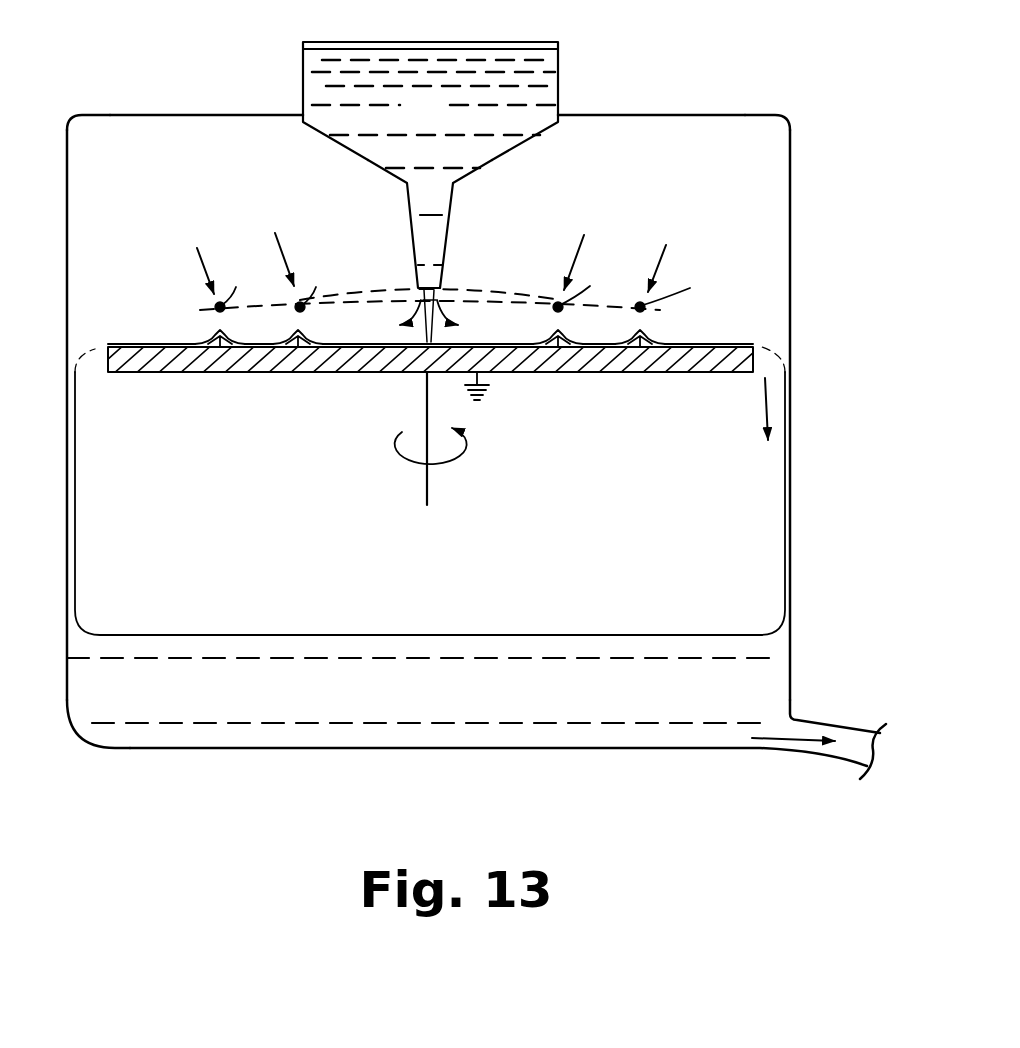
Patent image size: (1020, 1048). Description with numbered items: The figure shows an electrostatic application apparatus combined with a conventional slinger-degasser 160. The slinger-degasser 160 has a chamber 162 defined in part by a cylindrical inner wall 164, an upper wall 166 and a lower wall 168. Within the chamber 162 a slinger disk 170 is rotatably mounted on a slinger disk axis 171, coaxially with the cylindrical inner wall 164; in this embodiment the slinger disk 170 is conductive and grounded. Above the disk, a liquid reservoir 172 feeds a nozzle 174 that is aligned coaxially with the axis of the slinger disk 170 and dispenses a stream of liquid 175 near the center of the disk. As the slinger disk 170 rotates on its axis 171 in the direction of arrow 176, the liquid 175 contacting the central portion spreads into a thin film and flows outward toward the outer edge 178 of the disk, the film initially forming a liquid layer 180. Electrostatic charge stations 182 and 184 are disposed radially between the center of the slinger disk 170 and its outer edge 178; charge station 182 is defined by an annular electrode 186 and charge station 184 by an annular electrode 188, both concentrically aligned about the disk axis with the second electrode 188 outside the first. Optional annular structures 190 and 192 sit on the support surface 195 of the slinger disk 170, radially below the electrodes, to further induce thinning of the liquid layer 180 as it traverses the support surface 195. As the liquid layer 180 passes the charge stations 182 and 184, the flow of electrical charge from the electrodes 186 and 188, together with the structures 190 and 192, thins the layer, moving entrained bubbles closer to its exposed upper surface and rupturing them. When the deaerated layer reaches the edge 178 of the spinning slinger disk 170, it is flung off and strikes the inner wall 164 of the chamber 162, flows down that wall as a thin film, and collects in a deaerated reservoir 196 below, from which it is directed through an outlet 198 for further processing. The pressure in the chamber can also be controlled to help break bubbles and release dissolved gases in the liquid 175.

The slinger-degasser 160 is at (842, 194).
The chamber 162 is at (757, 115).
The cylindrical inner wall 164 is at (67, 183).
The upper wall 166 is at (678, 115).
The lower wall 168 is at (655, 752).
The slinger disk 170 is at (170, 375).
The slinger disk axis 171 is at (427, 490).
The liquid reservoir 172 is at (450, 118).
The nozzle 174 is at (441, 264).
The liquid 175 is at (415, 318).
The arrow 176 is at (466, 463).
The outer edge 178 is at (108, 375).
The liquid layer 180 is at (360, 345).
The electrostatic charge station 182 is at (432, 244).
The electrostatic charge station 184 is at (424, 253).
The annular electrode 186 is at (465, 280).
The annular electrode 188 is at (469, 280).
The annular structure 190 is at (300, 375).
The annular structure 192 is at (225, 375).
The support surface 195 is at (170, 345).
The deaerated reservoir 196 is at (462, 705).
The outlet 198 is at (835, 722).